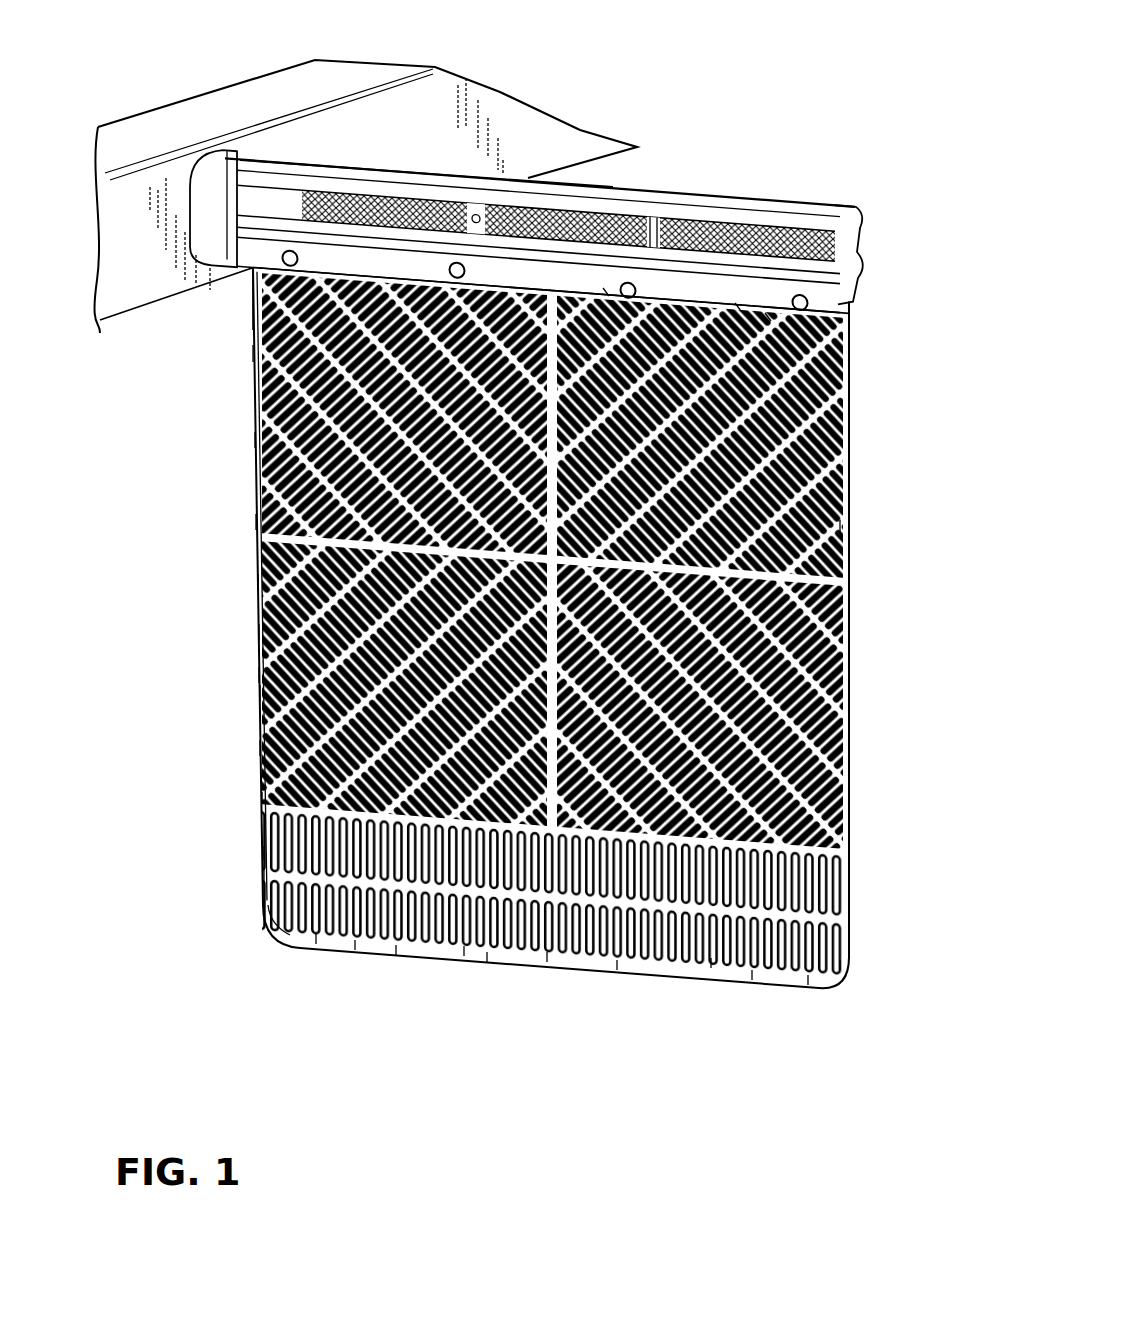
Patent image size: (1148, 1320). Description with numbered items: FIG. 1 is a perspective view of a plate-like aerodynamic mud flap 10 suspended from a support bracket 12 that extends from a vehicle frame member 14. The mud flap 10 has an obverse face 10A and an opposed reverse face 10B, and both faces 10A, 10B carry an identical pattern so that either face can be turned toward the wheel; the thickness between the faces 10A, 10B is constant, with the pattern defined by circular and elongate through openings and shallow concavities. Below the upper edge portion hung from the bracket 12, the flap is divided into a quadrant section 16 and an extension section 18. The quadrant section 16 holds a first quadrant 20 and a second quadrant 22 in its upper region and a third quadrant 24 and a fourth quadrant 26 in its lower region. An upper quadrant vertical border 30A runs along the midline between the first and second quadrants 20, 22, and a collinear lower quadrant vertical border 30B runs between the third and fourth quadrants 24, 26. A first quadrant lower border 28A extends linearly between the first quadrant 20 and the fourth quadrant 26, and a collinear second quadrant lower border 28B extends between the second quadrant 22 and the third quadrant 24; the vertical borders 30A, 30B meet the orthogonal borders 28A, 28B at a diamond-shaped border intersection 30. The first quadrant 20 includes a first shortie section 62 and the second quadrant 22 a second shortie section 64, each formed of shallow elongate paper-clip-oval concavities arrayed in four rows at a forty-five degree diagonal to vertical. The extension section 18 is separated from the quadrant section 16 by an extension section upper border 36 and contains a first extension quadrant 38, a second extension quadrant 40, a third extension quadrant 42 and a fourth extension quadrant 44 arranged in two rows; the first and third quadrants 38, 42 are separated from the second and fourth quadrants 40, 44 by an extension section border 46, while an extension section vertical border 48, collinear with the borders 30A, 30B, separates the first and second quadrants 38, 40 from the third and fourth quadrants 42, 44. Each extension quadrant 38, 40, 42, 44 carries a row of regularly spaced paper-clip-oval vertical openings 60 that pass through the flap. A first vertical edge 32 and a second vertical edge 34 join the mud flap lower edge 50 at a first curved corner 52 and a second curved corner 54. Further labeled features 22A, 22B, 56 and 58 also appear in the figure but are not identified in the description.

The mud flap 10 is at (141, 977).
The obverse face 10A is at (260, 693).
The reverse face 10B is at (260, 875).
The support bracket 12 is at (695, 193).
The vehicle frame member 14 is at (510, 125).
The quadrant section 16 is at (887, 290).
The extension section 18 is at (887, 858).
The first quadrant 20 is at (256, 485).
The second quadrant 22 is at (252, 394).
The bracket front plate 22A is at (768, 317).
The bracket rear plate 22B is at (605, 292).
The third quadrant 24 is at (260, 747).
The fourth quadrant 26 is at (257, 797).
The first quadrant lower border 28A is at (260, 582).
The second quadrant lower border 28B is at (843, 526).
The border intersection 30 is at (258, 675).
The upper quadrant vertical border 30A is at (260, 632).
The lower quadrant vertical border 30B is at (490, 960).
The first vertical edge 32 is at (252, 321).
The second vertical edge 34 is at (843, 392).
The extension section upper border 36 is at (467, 953).
The first extension quadrant 38 is at (260, 852).
The second extension quadrant 40 is at (320, 940).
The third extension quadrant 42 is at (753, 977).
The fourth extension quadrant 44 is at (712, 965).
The extension section border 46 is at (358, 947).
The extension section vertical border 48 is at (547, 960).
The mud flap lower edge 50 is at (618, 968).
The first curved corner 52 is at (275, 918).
The second curved corner 54 is at (840, 967).
The mounting hole 56 is at (252, 353).
The diagonal rib 58 is at (258, 522).
The vertical openings 60 is at (398, 952).
The first shortie section 62 is at (257, 440).
The second shortie section 64 is at (738, 307).